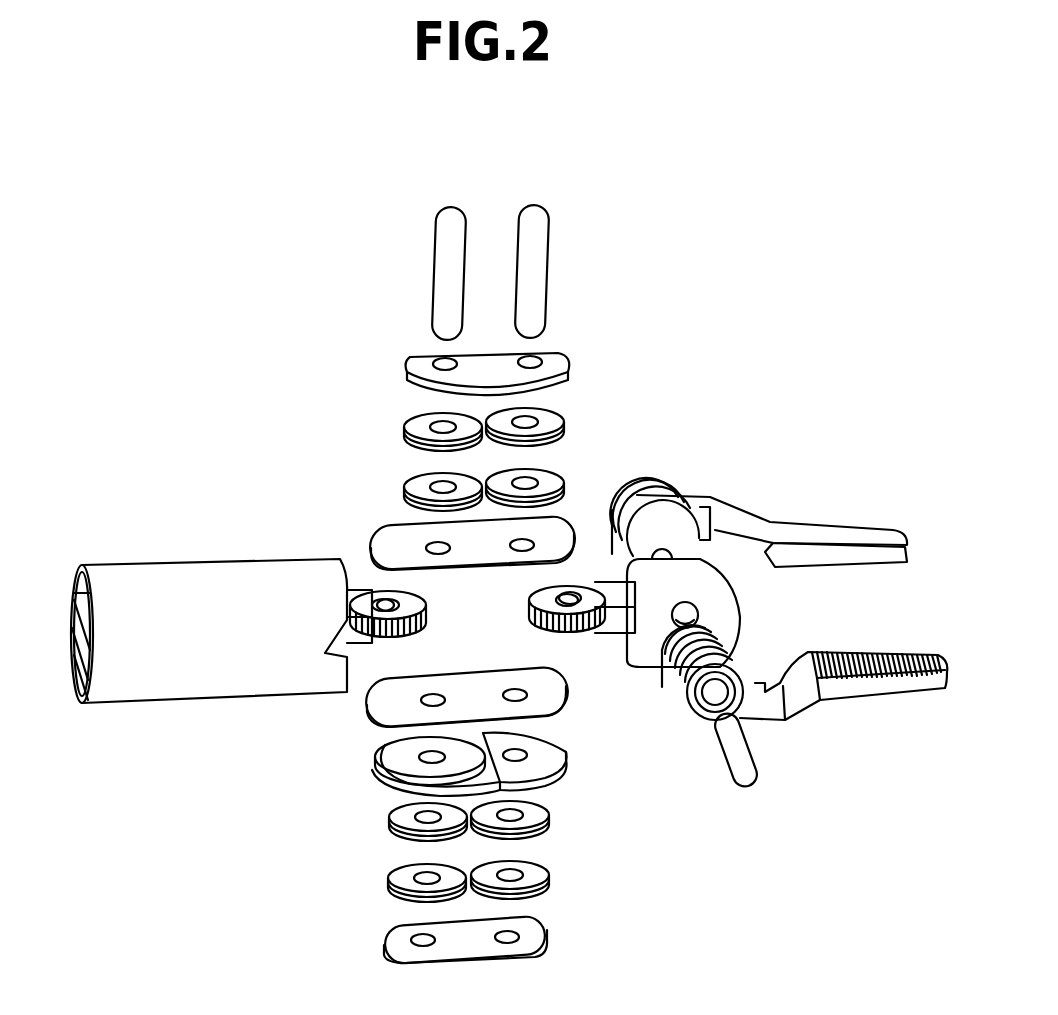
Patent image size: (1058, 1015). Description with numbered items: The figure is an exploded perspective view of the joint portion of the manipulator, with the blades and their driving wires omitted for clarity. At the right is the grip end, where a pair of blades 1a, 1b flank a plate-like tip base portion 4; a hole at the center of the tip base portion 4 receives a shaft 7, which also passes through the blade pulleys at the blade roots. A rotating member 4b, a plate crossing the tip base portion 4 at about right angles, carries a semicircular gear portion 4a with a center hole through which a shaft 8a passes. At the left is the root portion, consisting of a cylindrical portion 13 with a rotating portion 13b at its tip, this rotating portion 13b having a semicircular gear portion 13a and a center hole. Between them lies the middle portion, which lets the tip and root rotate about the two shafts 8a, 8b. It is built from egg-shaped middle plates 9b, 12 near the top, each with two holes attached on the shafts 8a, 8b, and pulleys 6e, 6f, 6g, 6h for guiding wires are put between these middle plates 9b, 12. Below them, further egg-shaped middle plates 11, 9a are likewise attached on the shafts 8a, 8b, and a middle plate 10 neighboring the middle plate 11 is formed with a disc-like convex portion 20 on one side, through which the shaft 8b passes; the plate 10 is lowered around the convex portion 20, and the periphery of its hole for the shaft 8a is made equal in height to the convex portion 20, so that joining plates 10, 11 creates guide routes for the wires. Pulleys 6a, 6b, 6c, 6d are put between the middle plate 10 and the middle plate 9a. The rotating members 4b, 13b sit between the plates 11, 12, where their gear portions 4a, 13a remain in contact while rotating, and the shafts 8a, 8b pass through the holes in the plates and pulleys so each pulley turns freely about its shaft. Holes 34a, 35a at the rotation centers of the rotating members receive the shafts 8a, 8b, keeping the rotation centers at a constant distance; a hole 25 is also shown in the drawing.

The blade 1a is at (837, 692).
The blade 1b is at (790, 521).
The tip base portion 4 is at (732, 620).
The semicircular gear portion 4a is at (540, 627).
The rotating member 4b is at (593, 590).
The pulley 6a is at (547, 875).
The pulley 6b is at (545, 818).
The pulley 6c is at (387, 882).
The pulley 6d is at (387, 817).
The pulley 6e is at (553, 418).
The pulley 6f is at (552, 484).
The pulley 6g is at (415, 423).
The pulley 6h is at (412, 484).
The shaft 7 is at (752, 768).
The shaft 8a is at (533, 256).
The shaft 8b is at (440, 272).
The middle plate 9a is at (547, 946).
The middle plate 9b is at (562, 354).
The middle plate 10 is at (566, 780).
The middle plate 11 is at (367, 697).
The middle plate 12 is at (375, 527).
The cylindrical portion 13 is at (120, 574).
The gear portion 13a is at (427, 621).
The rotating portion 13b is at (365, 598).
The convex portion 20 is at (373, 760).
The hole 25 is at (714, 694).
The hole 34a is at (580, 600).
The hole 35a is at (383, 607).